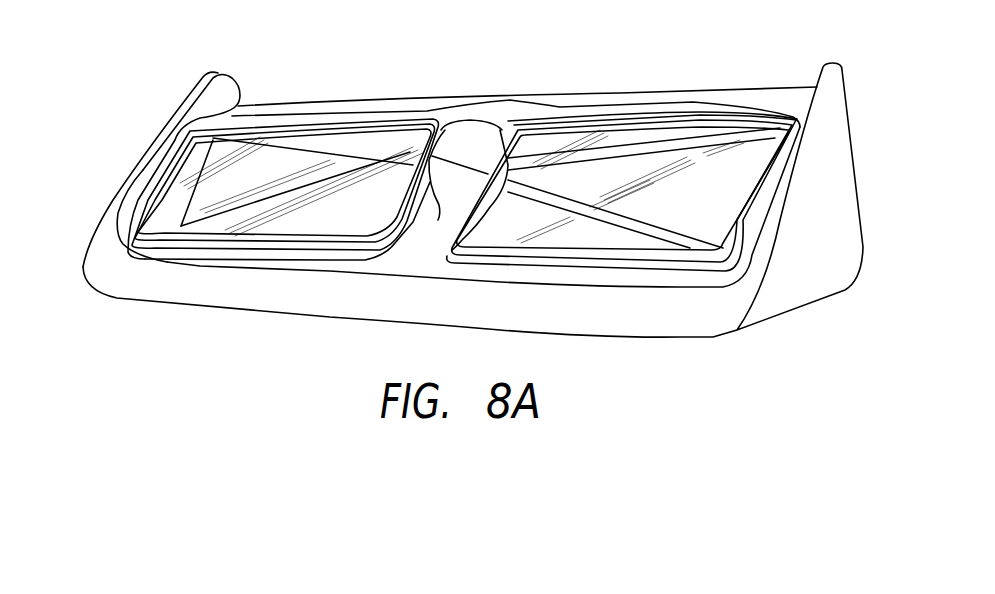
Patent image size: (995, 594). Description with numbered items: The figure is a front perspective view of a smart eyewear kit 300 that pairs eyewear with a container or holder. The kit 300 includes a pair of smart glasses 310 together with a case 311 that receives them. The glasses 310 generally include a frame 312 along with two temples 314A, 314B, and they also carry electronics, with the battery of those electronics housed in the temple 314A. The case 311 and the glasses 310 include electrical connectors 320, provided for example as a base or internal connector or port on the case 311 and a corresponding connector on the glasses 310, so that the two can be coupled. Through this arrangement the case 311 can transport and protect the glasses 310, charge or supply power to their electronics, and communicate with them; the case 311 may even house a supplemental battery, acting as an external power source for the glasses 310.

The smart eyewear kit 300 is at (158, 42).
The smart glasses 310 is at (338, 70).
The case 311 is at (131, 135).
The frame 312 is at (477, 103).
The temple 314A is at (210, 220).
The temple 314B is at (617, 217).
The electrical connectors 320 is at (108, 196).